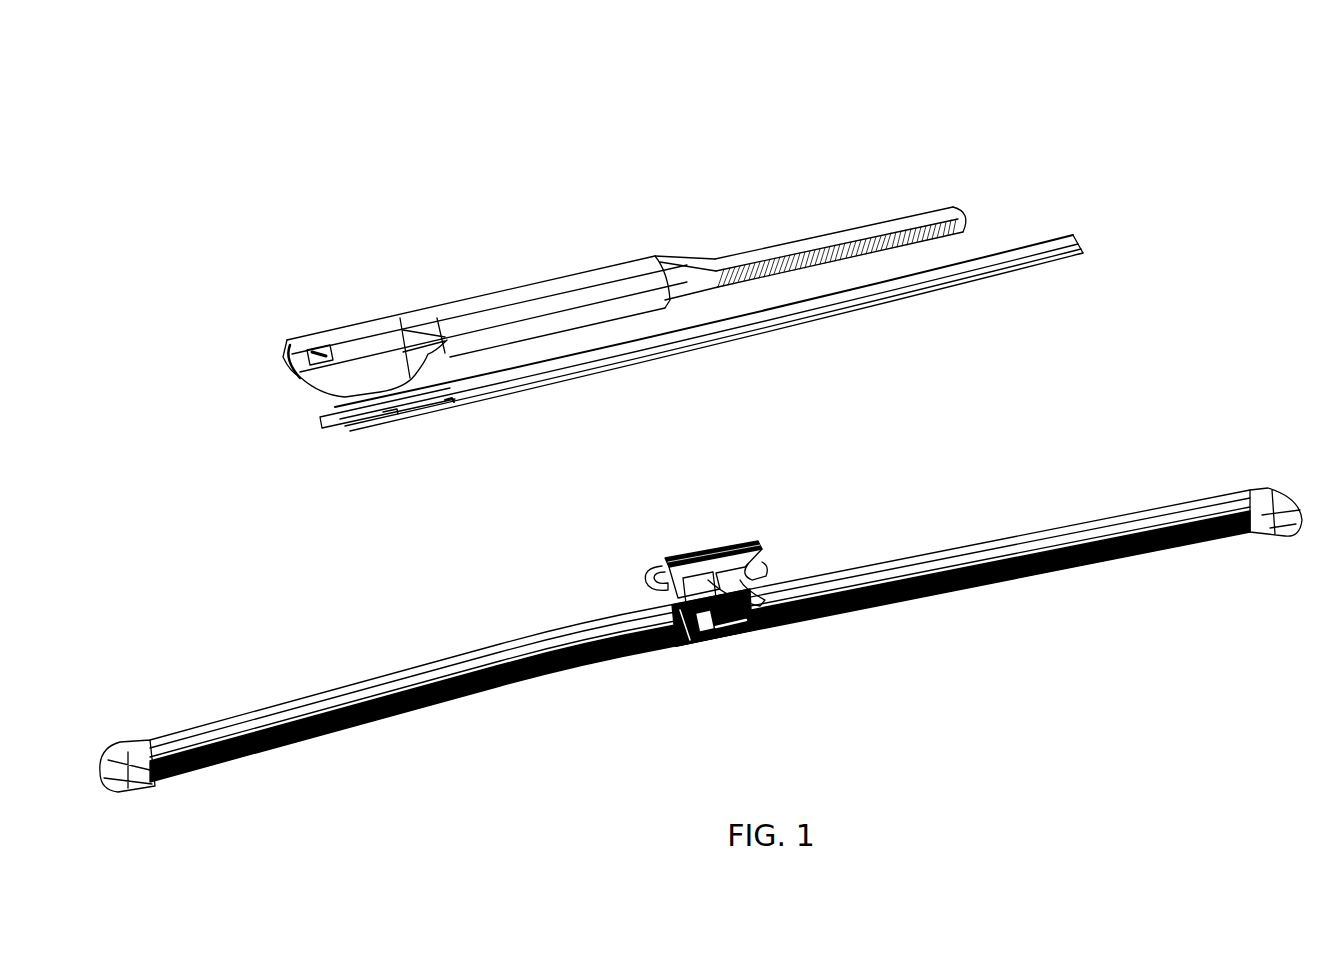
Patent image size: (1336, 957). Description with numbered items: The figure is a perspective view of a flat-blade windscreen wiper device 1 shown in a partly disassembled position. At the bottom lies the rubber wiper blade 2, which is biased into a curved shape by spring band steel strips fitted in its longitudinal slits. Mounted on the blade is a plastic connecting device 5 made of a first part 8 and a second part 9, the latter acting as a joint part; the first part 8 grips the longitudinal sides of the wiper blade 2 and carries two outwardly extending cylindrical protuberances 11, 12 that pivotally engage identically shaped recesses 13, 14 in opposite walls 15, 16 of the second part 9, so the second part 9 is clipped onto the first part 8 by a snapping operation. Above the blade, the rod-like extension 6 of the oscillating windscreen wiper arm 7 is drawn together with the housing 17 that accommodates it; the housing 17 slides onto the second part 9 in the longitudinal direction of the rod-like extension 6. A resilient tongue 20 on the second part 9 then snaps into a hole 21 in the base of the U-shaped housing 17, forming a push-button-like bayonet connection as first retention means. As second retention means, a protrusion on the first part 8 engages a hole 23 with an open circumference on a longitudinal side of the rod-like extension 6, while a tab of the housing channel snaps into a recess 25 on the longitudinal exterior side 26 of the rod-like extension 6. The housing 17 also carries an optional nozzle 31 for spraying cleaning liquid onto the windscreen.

The windscreen wiper device 1 is at (725, 195).
The wiper blade 2 is at (585, 669).
The connecting device 5 is at (806, 452).
The rod-like extension 6 is at (700, 333).
The windscreen wiper arm 7 is at (938, 207).
The first part 8 is at (693, 640).
The second part 9 is at (760, 543).
The cylindrical protuberance 11 is at (720, 627).
The cylindrical protuberance 12 is at (690, 603).
The recess 13 is at (760, 593).
The recess 14 is at (687, 547).
The wall 15 is at (748, 564).
The wall 16 is at (727, 540).
The housing 17 is at (508, 288).
The resilient tongue 20 is at (660, 570).
The hole 21 is at (316, 350).
The hole or recess 23 is at (390, 414).
The recess 25 is at (450, 402).
The longitudinal exterior side 26 is at (857, 315).
The nozzle 31 is at (300, 372).